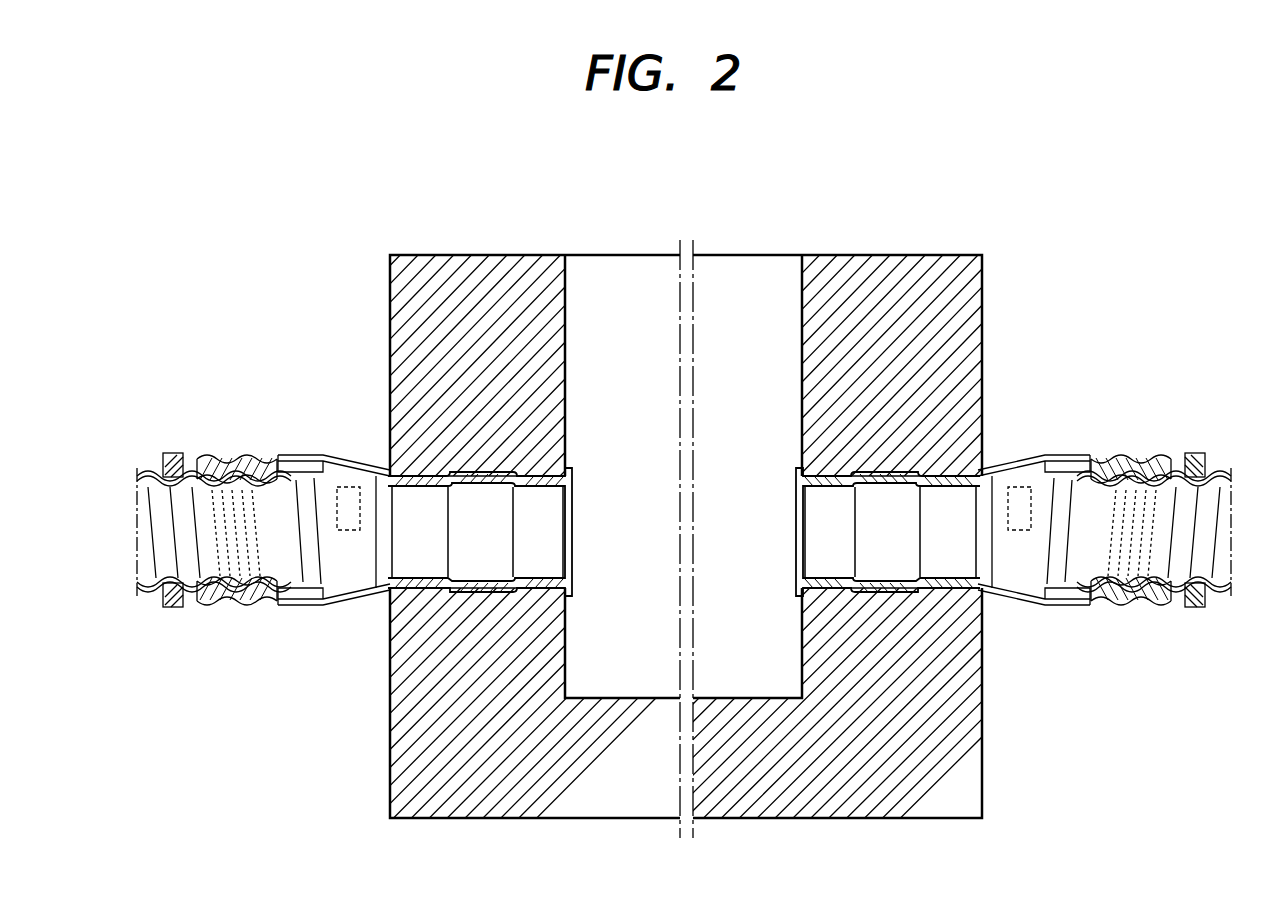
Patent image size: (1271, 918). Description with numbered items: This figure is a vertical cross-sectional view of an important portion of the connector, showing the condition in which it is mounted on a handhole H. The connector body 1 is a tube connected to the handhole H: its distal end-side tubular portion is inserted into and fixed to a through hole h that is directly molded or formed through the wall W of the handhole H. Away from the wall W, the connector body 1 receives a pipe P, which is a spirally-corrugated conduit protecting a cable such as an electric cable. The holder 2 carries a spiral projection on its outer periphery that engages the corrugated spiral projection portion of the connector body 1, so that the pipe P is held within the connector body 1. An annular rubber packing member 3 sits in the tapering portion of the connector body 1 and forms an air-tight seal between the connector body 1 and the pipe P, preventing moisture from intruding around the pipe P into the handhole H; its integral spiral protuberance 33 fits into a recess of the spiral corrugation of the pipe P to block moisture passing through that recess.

The wall W is at (483, 255).
The handhole H is at (714, 253).
The through hole h is at (566, 433).
The spiral protuberance 33 is at (355, 470).
The packing member 3 is at (330, 468).
The connector body 1 is at (288, 458).
The holder 2 is at (195, 470).
The pipe P is at (140, 472).